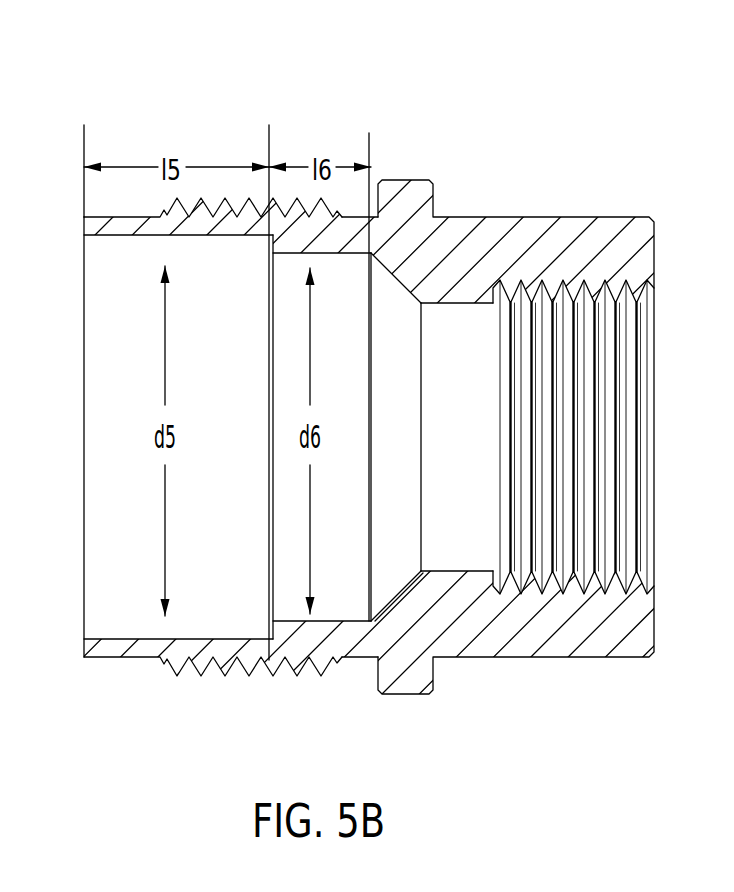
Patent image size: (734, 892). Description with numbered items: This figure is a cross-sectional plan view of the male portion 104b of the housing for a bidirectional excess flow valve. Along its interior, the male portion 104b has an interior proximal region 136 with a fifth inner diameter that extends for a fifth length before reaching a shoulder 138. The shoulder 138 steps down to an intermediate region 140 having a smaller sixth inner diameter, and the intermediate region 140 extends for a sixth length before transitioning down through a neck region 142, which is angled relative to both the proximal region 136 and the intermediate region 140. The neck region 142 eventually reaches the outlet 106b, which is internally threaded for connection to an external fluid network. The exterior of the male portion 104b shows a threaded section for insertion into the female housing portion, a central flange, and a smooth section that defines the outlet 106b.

The male portion of the housing 104b is at (486, 118).
The outlet 106b is at (620, 518).
The interior proximal region 136 is at (103, 615).
The shoulder 138 is at (273, 623).
The intermediate region 140 is at (352, 598).
The neck region 142 is at (410, 593).